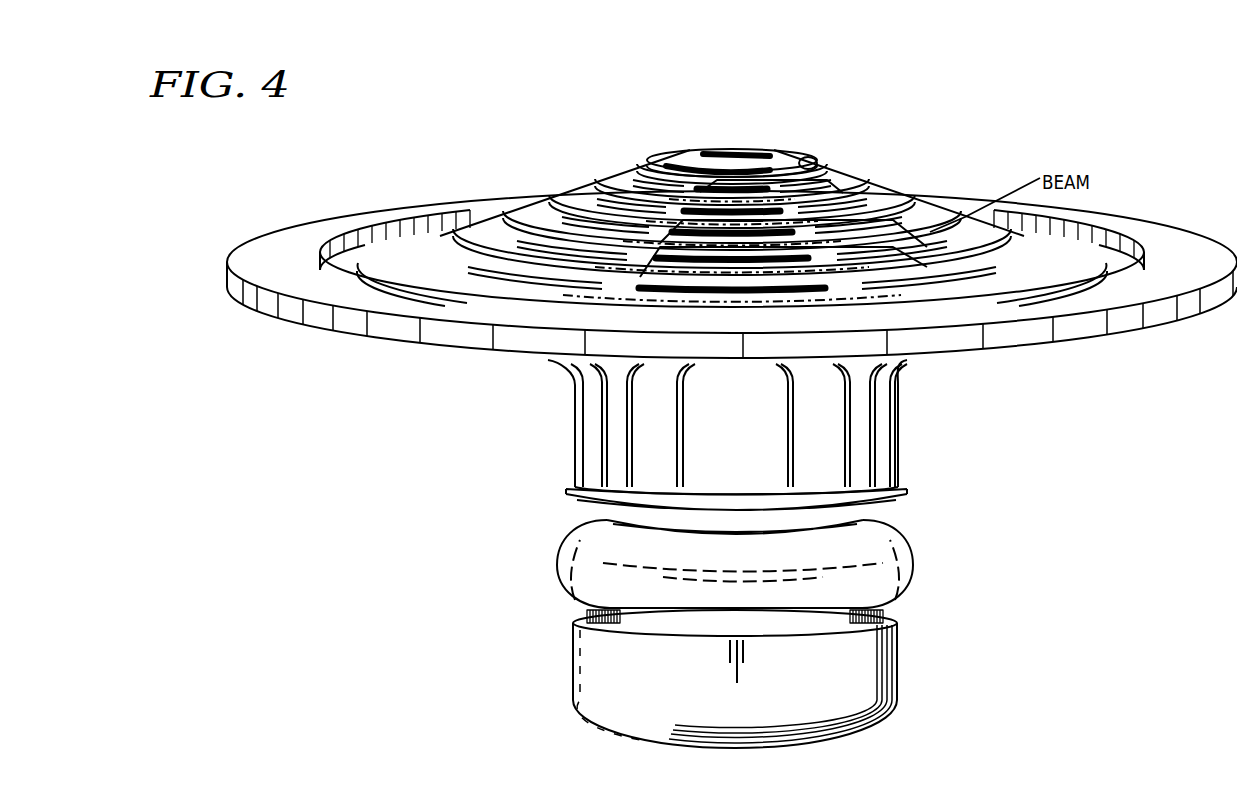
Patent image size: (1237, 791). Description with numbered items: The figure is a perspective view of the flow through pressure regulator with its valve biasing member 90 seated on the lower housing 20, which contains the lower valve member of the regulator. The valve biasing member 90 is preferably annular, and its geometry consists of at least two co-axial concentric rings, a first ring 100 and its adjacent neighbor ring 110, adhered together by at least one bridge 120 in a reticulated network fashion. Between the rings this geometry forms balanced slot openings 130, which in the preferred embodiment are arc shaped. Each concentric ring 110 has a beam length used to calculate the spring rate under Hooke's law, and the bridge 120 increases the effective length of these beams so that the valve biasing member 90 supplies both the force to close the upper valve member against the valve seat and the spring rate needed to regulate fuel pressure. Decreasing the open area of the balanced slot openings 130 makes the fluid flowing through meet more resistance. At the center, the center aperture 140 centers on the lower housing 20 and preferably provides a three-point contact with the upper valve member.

The lower housing 20 is at (1087, 343).
The valve biasing member 90 is at (598, 173).
The first ring 100 is at (838, 163).
The concentric ring 110 is at (870, 192).
The bridge 120 is at (688, 176).
The balanced slot opening 130 is at (812, 160).
The center aperture 140 is at (764, 151).